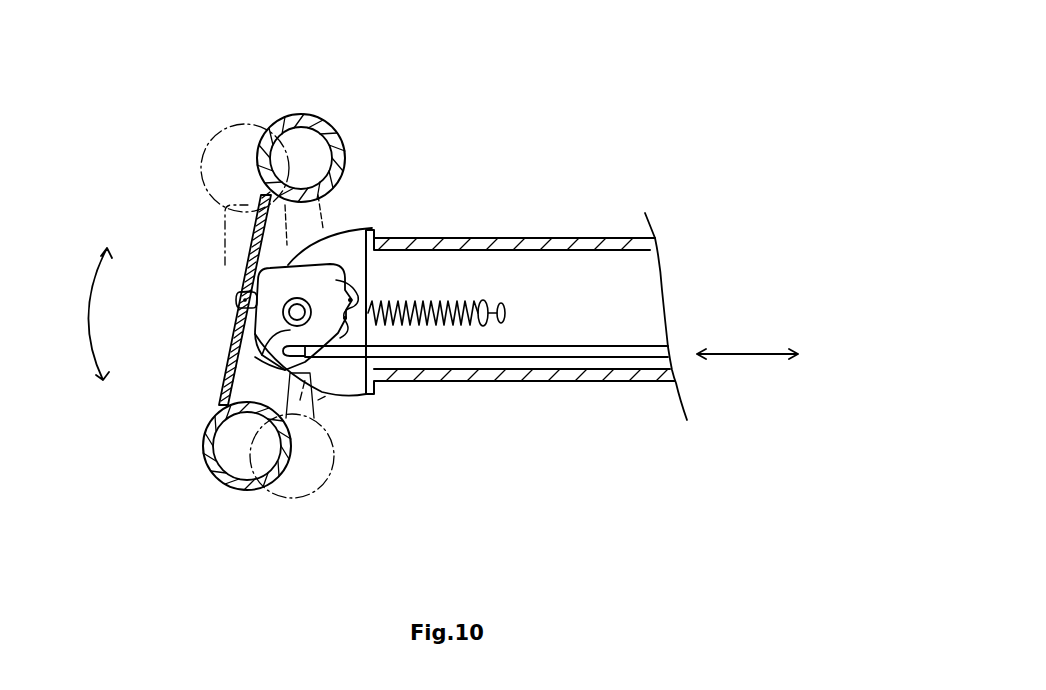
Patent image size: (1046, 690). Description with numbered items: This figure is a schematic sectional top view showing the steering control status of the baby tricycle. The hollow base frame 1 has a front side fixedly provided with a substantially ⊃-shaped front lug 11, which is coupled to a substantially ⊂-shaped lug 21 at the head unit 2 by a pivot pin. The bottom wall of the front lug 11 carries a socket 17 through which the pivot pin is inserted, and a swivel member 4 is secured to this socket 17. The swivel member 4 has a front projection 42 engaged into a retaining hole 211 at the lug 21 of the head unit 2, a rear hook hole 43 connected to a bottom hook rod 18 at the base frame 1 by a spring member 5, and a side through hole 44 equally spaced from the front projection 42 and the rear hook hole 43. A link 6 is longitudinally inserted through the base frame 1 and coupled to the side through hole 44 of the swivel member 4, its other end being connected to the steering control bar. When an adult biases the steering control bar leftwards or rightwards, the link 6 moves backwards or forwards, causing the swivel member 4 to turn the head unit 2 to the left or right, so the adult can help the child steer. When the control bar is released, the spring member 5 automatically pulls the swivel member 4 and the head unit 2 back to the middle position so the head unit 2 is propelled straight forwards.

The base frame 1 is at (591, 245).
The head unit 2 is at (256, 94).
The swivel member 4 is at (315, 287).
The spring member 5 is at (440, 305).
The link 6 is at (617, 352).
The front lug 11 is at (352, 255).
The socket 17 is at (284, 318).
The bottom hook rod 18 is at (485, 326).
The lug 21 is at (247, 233).
The front projection 42 is at (238, 305).
The rear hook hole 43 is at (347, 325).
The side through hole 44 is at (262, 352).
The retaining hole 211 is at (240, 293).